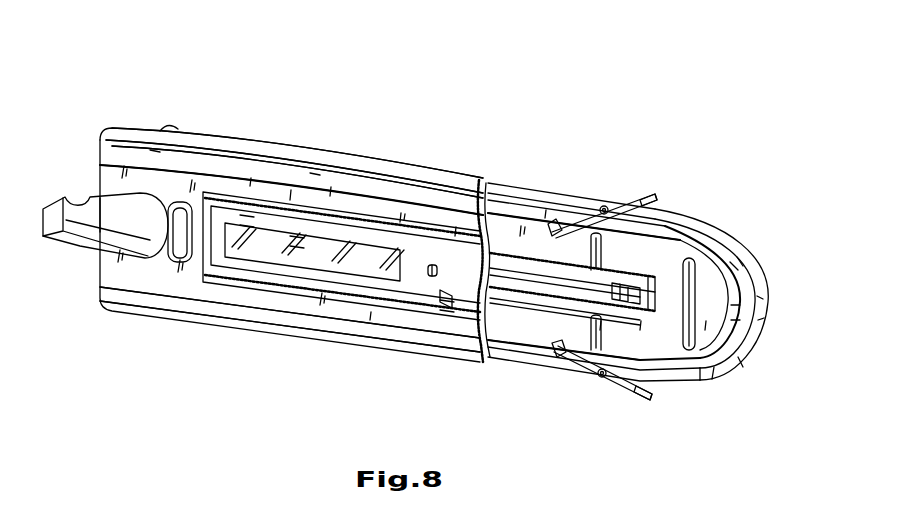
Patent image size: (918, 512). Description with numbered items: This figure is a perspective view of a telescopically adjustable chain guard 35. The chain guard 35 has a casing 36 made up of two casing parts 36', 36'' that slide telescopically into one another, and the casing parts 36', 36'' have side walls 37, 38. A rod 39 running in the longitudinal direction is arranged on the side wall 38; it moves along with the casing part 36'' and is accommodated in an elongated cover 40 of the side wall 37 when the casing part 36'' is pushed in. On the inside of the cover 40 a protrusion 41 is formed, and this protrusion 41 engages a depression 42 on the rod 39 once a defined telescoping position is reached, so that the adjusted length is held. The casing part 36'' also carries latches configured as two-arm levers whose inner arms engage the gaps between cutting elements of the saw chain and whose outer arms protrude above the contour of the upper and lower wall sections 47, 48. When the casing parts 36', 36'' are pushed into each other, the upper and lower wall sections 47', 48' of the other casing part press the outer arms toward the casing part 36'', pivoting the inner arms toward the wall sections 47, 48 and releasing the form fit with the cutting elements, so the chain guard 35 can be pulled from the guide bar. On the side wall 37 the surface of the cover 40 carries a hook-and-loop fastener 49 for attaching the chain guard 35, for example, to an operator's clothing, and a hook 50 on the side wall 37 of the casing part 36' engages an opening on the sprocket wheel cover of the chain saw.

The chain guard 35 is at (320, 100).
The casing 36 is at (297, 139).
The casing part 36' is at (291, 158).
The casing part 36'' is at (601, 212).
The side wall 37 is at (250, 308).
The side wall 38 is at (675, 340).
The rod 39 is at (510, 290).
The cover 40 is at (444, 310).
The protrusion 41 is at (428, 282).
The depression 42 is at (646, 278).
The upper wall section 47 is at (343, 243).
The upper wall section 47' is at (294, 140).
The lower wall section 48 is at (564, 380).
The lower wall section 48' is at (290, 346).
The hook-and-loop fastener 49 is at (247, 258).
The hook 50 is at (55, 230).